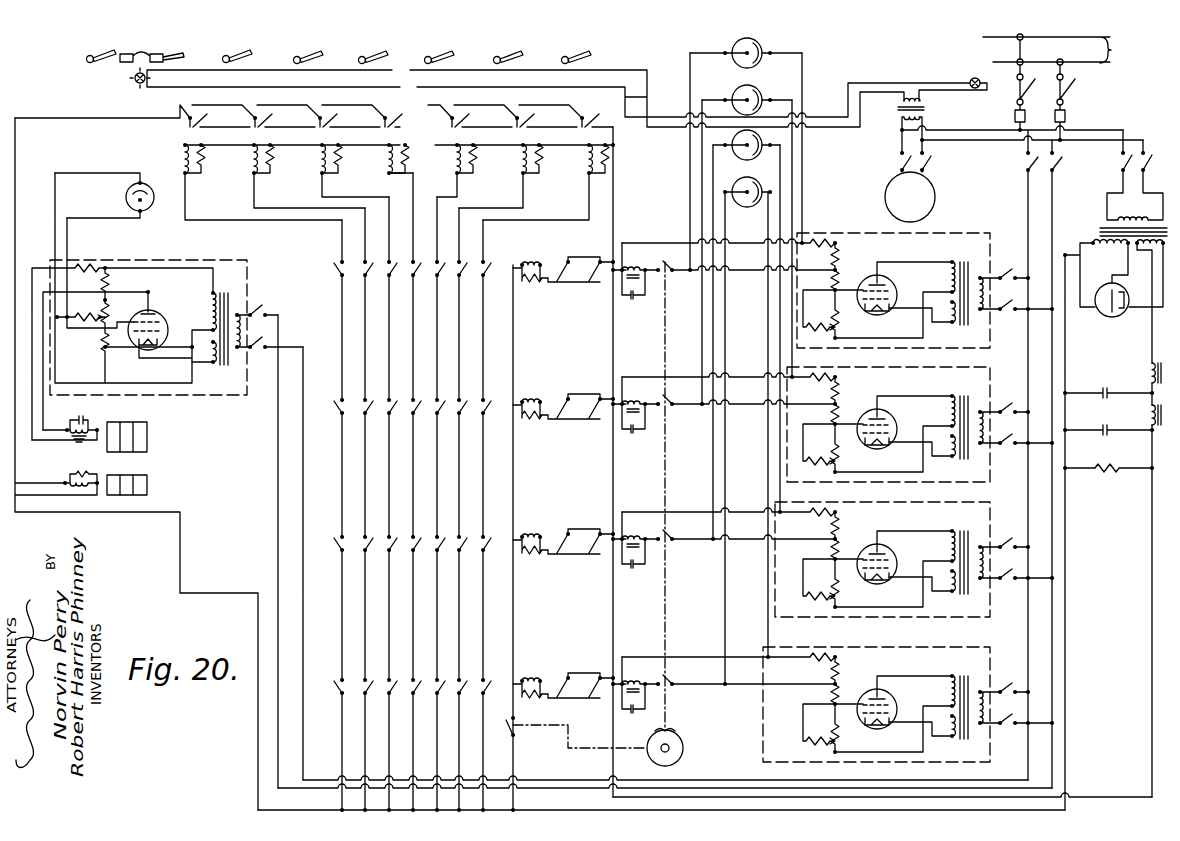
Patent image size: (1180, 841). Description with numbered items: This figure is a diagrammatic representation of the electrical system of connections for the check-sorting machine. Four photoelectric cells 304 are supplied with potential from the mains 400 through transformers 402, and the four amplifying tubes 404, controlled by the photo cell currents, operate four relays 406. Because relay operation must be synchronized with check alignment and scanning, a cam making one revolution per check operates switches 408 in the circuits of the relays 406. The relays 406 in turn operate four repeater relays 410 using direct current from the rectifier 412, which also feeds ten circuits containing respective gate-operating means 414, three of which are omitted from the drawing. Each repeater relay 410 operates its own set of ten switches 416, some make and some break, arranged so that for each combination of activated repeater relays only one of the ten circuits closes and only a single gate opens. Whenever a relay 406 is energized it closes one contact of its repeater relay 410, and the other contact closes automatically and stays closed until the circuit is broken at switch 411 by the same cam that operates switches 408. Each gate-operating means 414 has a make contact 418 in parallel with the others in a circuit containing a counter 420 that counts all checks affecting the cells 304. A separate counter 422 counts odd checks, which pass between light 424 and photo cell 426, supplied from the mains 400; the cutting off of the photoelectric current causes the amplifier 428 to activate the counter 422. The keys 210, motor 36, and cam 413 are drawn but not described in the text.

The keys 210 is at (570, 53).
The light 424 is at (134, 81).
The make contact 418 is at (586, 113).
The gate-operating means 414 is at (540, 172).
The photo cell 426 is at (127, 198).
The amplifier 428 is at (156, 314).
The counter 422 is at (147, 449).
The counter 420 is at (147, 486).
The switches 416 is at (333, 691).
The repeater relay 410 is at (568, 682).
The switch 411 is at (513, 738).
The cam 413 is at (683, 748).
The relay 406 is at (640, 683).
The switches 408 is at (668, 690).
The photoelectric cell 304 is at (760, 188).
The amplifying tube 404 is at (884, 691).
The transformer 402 is at (972, 687).
The motor 36 is at (932, 150).
The mains 400 is at (1062, 87).
The rectifier 412 is at (1112, 317).